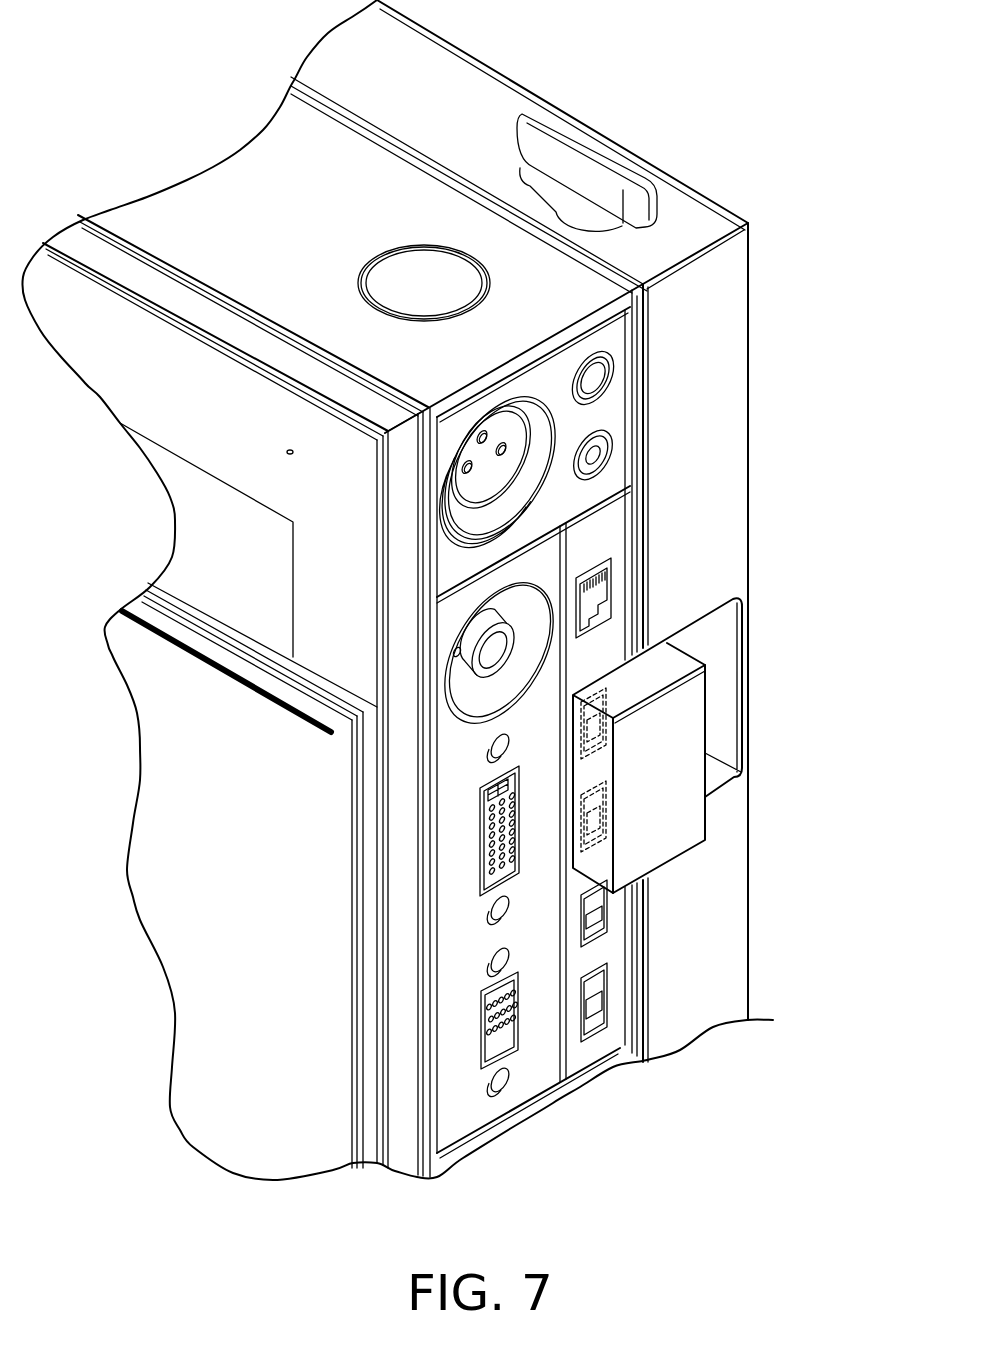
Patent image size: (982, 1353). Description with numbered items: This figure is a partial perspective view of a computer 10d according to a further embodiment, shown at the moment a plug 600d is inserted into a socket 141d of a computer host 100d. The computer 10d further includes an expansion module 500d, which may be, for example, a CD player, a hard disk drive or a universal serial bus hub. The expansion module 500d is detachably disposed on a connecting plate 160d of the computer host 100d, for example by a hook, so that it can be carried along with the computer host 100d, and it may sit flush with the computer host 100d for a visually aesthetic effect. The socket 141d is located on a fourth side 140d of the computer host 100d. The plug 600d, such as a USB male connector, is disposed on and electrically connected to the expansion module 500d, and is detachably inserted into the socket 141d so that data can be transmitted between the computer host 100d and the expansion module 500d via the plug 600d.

The computer 10d is at (96, 58).
The computer host 100d is at (213, 207).
The fourth side 140d is at (630, 720).
The socket 141d is at (610, 827).
The connecting plate 160d is at (633, 360).
The expansion module 500d is at (707, 458).
The plug 600d is at (683, 705).